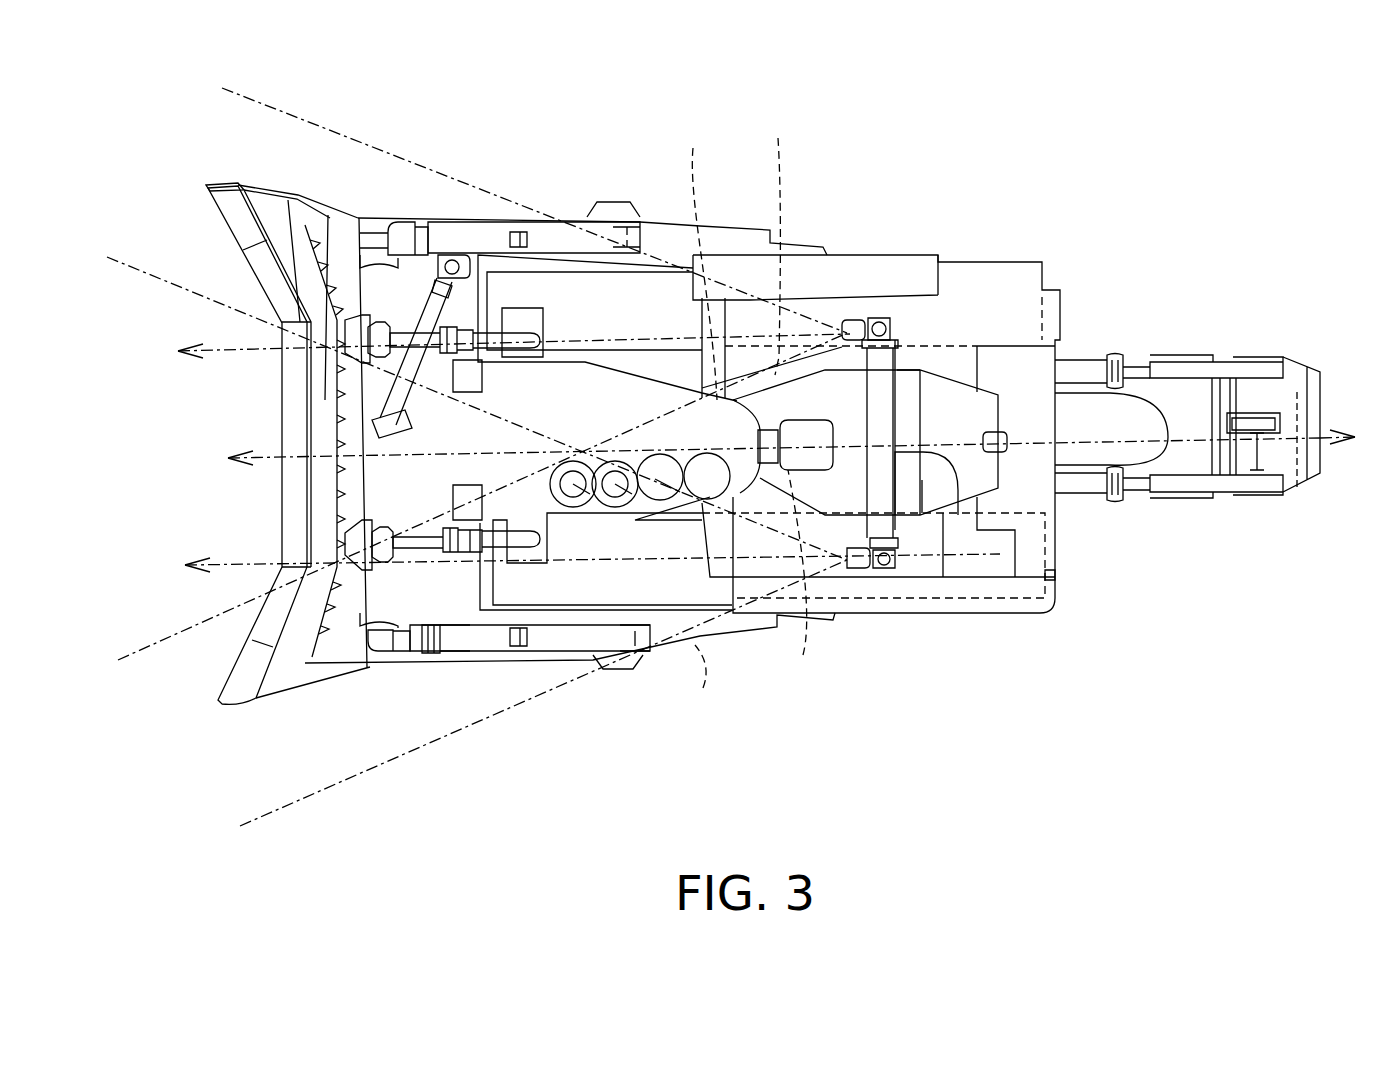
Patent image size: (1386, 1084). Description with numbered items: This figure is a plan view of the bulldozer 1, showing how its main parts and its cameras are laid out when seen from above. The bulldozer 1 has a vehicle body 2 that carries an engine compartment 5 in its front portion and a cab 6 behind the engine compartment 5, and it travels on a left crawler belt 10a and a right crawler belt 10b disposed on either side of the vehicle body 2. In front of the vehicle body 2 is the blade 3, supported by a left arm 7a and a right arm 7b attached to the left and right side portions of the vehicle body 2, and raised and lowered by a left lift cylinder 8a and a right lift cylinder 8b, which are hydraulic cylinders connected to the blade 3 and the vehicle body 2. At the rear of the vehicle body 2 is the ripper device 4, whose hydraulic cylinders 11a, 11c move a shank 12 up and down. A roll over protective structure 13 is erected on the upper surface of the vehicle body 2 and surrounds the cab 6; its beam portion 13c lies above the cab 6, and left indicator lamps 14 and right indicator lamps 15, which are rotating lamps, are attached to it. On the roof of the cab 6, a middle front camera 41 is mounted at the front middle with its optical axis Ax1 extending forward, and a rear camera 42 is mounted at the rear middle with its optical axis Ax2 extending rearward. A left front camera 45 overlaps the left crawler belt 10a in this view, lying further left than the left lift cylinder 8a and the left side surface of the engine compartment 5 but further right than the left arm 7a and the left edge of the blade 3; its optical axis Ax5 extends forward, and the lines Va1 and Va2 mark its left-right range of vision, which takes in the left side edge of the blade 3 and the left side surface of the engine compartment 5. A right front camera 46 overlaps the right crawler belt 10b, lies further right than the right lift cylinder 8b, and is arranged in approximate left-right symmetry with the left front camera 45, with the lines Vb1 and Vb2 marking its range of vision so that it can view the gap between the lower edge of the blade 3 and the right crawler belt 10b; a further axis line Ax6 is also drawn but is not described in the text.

The bulldozer 1 is at (1003, 183).
The vehicle body 2 is at (585, 312).
The blade 3 is at (316, 403).
The ripper device 4 is at (1187, 387).
The engine compartment 5 is at (657, 405).
The cab 6 is at (828, 393).
The left arm 7a is at (567, 637).
The right arm 7b is at (575, 240).
The left lift cylinder 8a is at (478, 300).
The right lift cylinder 8b is at (450, 237).
The left crawler belt 10a is at (1062, 580).
The right crawler belt 10b is at (1058, 300).
The hydraulic cylinder 11a is at (1183, 492).
The hydraulic cylinder 11c is at (1183, 365).
The shank 12 is at (1268, 440).
The roll over protective structure (ROPS) 13 is at (905, 415).
The beam portion 13c is at (957, 490).
The left indicator lamps 14 is at (885, 570).
The right indicator lamps 15 is at (874, 300).
The middle front camera 41 is at (766, 425).
The rear camera 42 is at (1010, 432).
The left front camera 45 is at (862, 568).
The right front camera 46 is at (853, 318).
The optical axis of the middle front camera Ax1 is at (272, 458).
The optical axis of the rear camera Ax2 is at (1310, 478).
The optical axis of the left front camera Ax5 is at (247, 567).
The axis 6 Ax6 is at (243, 350).
The range-of-vision line Va1 is at (543, 693).
The range-of-vision line Va2 is at (477, 474).
The range-of-vision line Vb1 is at (534, 244).
The range-of-vision line Vb2 is at (482, 383).